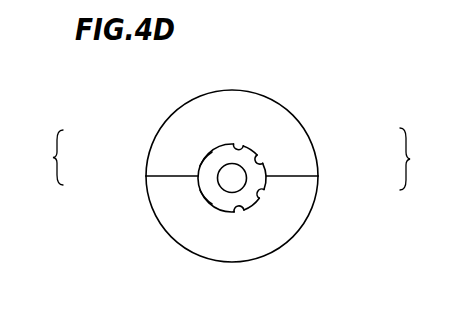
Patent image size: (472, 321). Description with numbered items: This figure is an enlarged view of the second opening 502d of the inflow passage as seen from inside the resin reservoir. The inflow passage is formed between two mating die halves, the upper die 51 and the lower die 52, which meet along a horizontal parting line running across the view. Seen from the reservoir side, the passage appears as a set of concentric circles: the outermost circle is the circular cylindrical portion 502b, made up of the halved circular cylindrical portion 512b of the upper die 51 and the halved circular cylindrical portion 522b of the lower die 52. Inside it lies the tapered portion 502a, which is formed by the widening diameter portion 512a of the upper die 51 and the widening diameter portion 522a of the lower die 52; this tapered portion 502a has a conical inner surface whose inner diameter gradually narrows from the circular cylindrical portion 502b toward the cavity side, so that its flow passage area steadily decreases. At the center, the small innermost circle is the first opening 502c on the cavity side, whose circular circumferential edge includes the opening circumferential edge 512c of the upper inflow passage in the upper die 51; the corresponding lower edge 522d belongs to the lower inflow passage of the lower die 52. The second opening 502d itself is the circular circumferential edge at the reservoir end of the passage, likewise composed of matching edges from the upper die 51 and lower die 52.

The upper die 51 is at (285, 125).
The lower die 52 is at (295, 215).
The tapered portion 502a is at (34, 157).
The circular cylindrical portion 502b is at (428, 159).
The first opening 502c is at (224, 191).
The second opening 502d is at (208, 154).
The widening diameter portion 512a is at (212, 162).
The halved circular cylindrical portion 512b is at (262, 162).
The opening circumferential edge 512c is at (242, 141).
The widening diameter portion 522a is at (212, 188).
The halved circular cylindrical portion 522b is at (255, 184).
The second plate bottom recess 522d is at (243, 210).